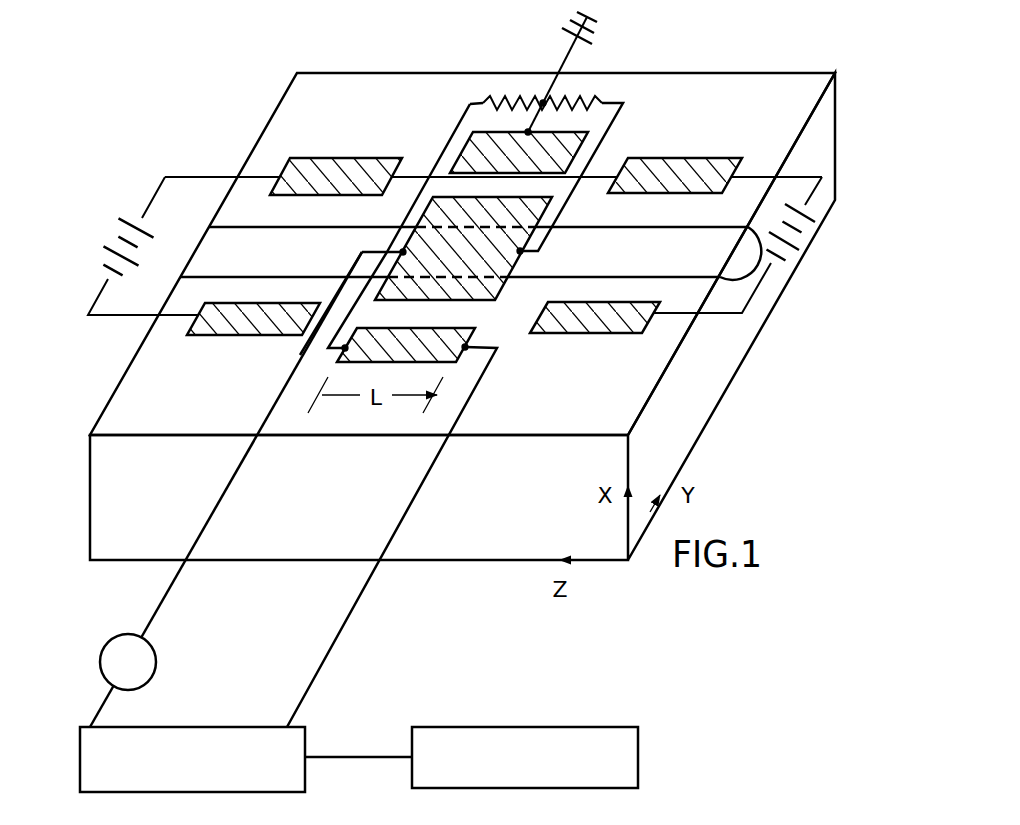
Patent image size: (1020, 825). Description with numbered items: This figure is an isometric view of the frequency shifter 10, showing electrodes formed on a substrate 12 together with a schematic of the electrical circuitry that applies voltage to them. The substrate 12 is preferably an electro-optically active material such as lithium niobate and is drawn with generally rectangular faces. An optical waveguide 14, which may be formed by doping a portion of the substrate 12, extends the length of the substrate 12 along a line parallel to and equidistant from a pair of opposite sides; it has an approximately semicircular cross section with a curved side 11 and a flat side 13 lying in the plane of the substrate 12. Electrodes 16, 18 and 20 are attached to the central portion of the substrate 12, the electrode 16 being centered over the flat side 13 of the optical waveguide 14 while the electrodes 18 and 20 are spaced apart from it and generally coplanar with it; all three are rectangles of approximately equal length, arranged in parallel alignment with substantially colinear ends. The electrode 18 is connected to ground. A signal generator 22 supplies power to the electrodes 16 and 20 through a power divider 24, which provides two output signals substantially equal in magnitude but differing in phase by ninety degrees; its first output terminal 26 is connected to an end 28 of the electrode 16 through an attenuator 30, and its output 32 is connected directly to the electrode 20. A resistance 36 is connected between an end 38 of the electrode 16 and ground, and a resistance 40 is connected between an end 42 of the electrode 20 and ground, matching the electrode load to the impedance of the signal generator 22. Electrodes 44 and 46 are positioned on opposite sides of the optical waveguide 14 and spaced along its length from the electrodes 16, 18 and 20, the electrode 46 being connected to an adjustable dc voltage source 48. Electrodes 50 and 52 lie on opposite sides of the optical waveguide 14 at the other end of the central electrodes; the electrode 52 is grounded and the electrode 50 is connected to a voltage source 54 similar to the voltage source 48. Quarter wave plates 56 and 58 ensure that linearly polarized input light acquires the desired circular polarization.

The frequency shifter 10 is at (212, 90).
The curved side 11 is at (754, 266).
The substrate 12 is at (130, 368).
The flat side 13 is at (613, 230).
The optical waveguide 14 is at (690, 223).
The electrode 16 is at (410, 214).
The electrode 18 is at (463, 140).
The electrode 20 is at (470, 330).
The signal generator 22 is at (517, 725).
The power divider 24 is at (198, 727).
The first output terminal 26 is at (90, 712).
The end 28 is at (402, 252).
The attenuator 30 is at (156, 648).
The output 32 is at (298, 712).
The resistance 36 is at (593, 101).
The end 38 is at (522, 253).
The resistance 40 is at (507, 100).
The end 42 is at (345, 349).
The electrode 44 is at (672, 157).
The electrode 46 is at (592, 336).
The voltage source 48 is at (805, 237).
The electrode 50 is at (322, 157).
The electrode 52 is at (200, 337).
The voltage source 54 is at (108, 224).
The quarter wave plate 56 is at (688, 302).
The quarter wave plate 58 is at (196, 289).